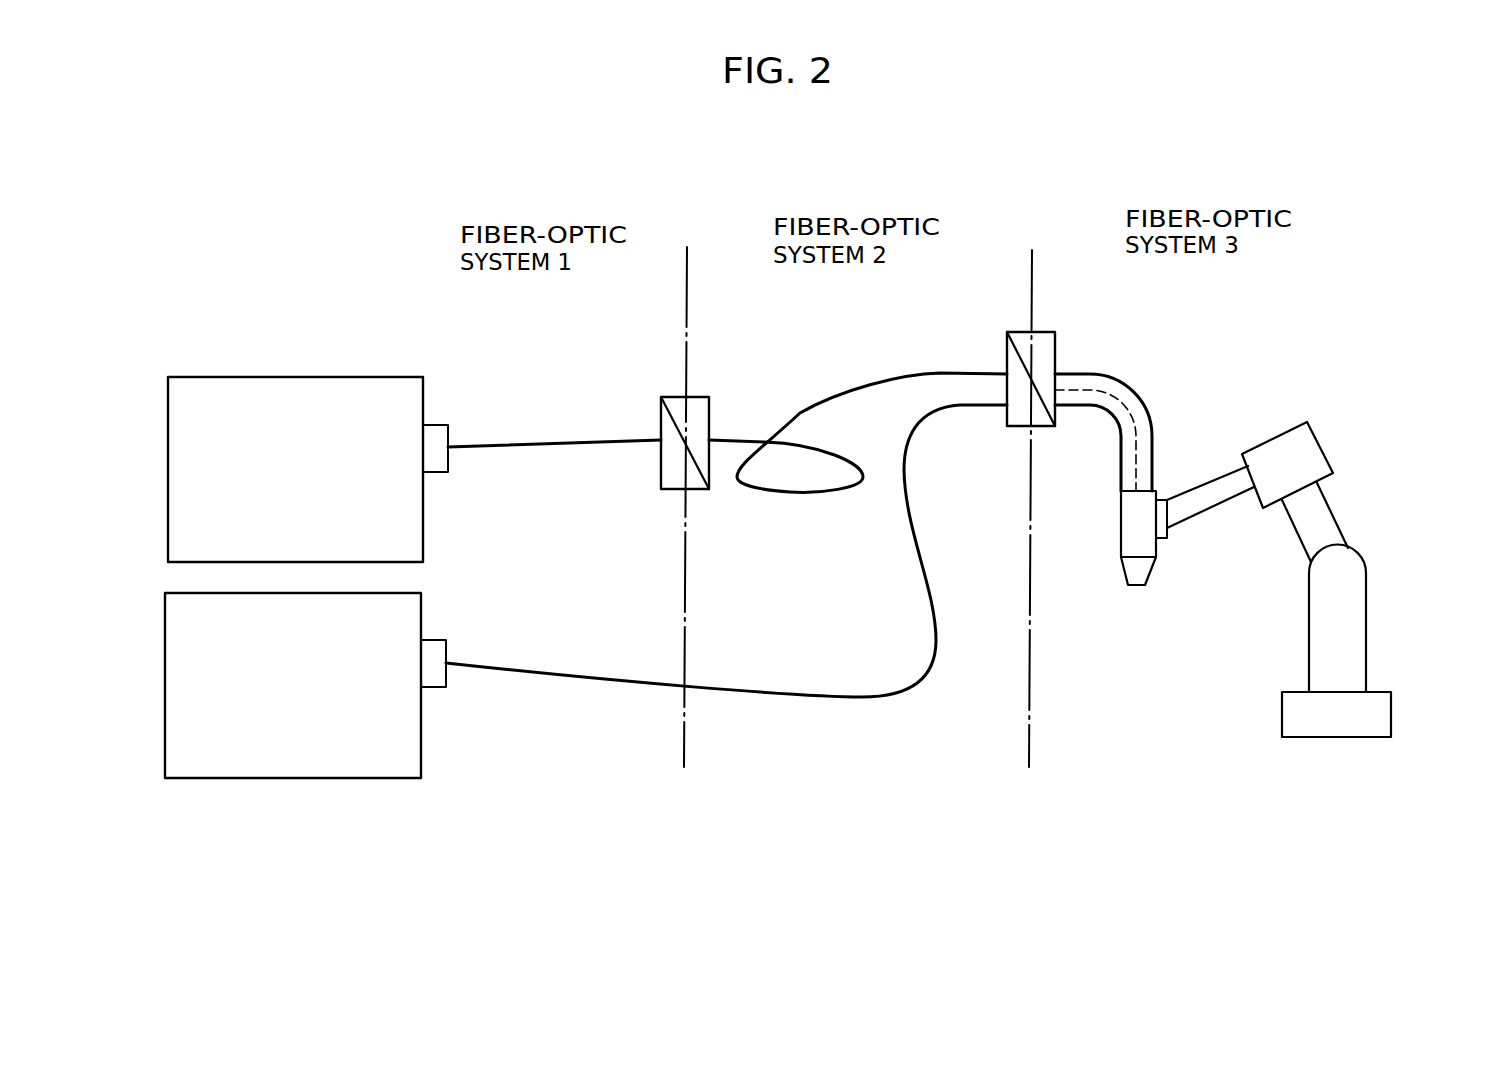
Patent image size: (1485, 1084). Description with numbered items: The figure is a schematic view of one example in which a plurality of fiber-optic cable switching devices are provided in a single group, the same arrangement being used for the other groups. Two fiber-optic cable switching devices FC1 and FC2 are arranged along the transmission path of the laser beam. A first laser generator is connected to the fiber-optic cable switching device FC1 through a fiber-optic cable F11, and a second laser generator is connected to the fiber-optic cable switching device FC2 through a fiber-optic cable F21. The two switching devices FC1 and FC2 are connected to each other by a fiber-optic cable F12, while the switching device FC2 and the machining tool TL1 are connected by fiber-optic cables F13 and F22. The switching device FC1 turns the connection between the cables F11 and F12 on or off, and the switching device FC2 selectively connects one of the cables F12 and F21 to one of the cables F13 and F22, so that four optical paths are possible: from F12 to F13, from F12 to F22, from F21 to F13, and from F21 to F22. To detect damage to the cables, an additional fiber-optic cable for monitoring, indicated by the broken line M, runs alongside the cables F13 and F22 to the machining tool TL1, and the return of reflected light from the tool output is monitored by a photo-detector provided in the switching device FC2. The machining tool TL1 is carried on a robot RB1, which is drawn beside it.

The fiber-optic cable F11 is at (523, 448).
The fiber-optic cable F12 is at (797, 493).
The fiber-optic cable F21 is at (572, 677).
The fiber-optic cable F13 is at (1135, 392).
The fiber-optic cable F22 is at (1090, 410).
The fiber-optic cable switching device FC1 is at (700, 397).
The fiber-optic cable switching device FC2 is at (1056, 348).
The fiber-optic cable for monitoring M is at (1135, 430).
The machining tool TL1 is at (1150, 578).
The robot RB1 is at (1367, 618).